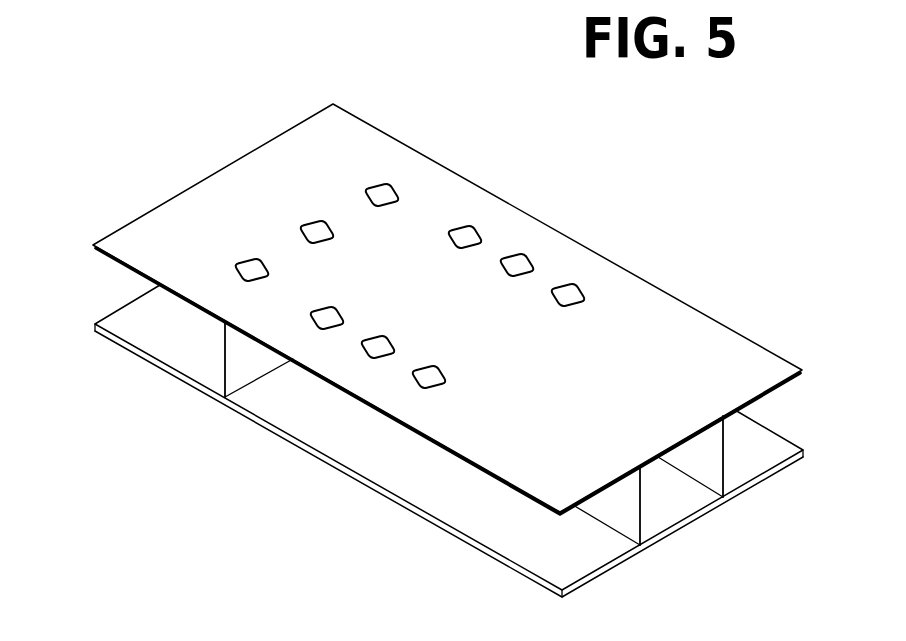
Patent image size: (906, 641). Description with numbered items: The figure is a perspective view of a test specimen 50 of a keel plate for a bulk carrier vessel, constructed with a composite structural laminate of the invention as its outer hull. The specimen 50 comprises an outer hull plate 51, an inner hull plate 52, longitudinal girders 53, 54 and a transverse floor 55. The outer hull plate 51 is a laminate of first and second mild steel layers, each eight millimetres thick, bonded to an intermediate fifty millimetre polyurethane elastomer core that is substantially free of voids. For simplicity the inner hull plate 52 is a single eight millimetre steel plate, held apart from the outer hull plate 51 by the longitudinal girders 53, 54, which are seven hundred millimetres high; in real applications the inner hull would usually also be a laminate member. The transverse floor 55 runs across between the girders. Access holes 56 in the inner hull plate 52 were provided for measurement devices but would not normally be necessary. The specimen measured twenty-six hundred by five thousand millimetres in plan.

The specimen 50 is at (426, 357).
The outer hull plate 51 is at (426, 441).
The inner hull plate 52 is at (438, 306).
The longitudinal girder 53 is at (635, 541).
The longitudinal girder 54 is at (722, 492).
The transverse floor 55 is at (239, 403).
The access holes 56 is at (410, 243).